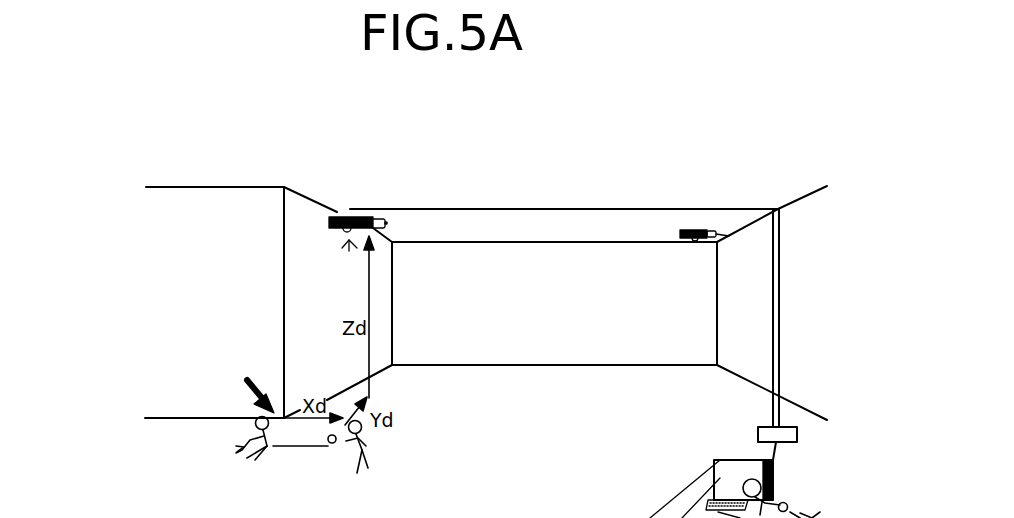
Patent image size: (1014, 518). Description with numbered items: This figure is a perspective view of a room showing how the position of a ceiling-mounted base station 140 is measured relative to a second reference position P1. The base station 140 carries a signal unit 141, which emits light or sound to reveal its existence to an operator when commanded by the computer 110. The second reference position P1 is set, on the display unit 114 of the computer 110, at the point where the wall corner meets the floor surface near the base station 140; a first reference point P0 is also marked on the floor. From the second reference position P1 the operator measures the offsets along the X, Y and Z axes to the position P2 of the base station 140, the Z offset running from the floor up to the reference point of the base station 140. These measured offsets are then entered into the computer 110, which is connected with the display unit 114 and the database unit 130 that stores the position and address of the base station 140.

The base station 140 is at (357, 193).
The signal unit 141 is at (321, 264).
The display unit 114 is at (711, 467).
The computer 110 is at (823, 484).
The database unit 130 is at (823, 484).
The first reference point P0 is at (201, 470).
The second reference position P1 is at (159, 379).
The position of the base station P2 is at (390, 223).